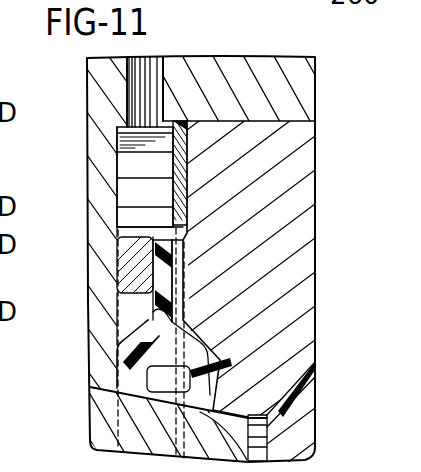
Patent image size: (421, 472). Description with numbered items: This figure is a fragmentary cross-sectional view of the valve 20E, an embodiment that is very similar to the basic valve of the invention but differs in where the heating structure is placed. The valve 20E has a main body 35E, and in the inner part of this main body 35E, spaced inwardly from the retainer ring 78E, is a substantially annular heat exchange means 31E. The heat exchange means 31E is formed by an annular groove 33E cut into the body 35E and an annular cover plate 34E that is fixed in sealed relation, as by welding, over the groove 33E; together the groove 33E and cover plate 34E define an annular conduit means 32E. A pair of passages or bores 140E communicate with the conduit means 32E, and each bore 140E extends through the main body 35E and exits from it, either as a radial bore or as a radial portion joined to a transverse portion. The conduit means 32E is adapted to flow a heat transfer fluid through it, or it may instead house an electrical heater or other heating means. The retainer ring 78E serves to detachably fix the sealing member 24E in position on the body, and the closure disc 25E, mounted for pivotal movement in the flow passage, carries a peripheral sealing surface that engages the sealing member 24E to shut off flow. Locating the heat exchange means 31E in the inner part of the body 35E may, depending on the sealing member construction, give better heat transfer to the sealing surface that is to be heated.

The valve 20E is at (78, 104).
The bore 140E is at (157, 72).
The main body 35E is at (322, 56).
The annular conduit means 32E is at (142, 167).
The annular groove 33E is at (150, 208).
The heat exchange means 31E is at (196, 167).
The annular cover plate 34E is at (190, 197).
The retainer ring 78E is at (300, 293).
The sealing member 24E is at (115, 348).
The closure disc 25E is at (97, 433).